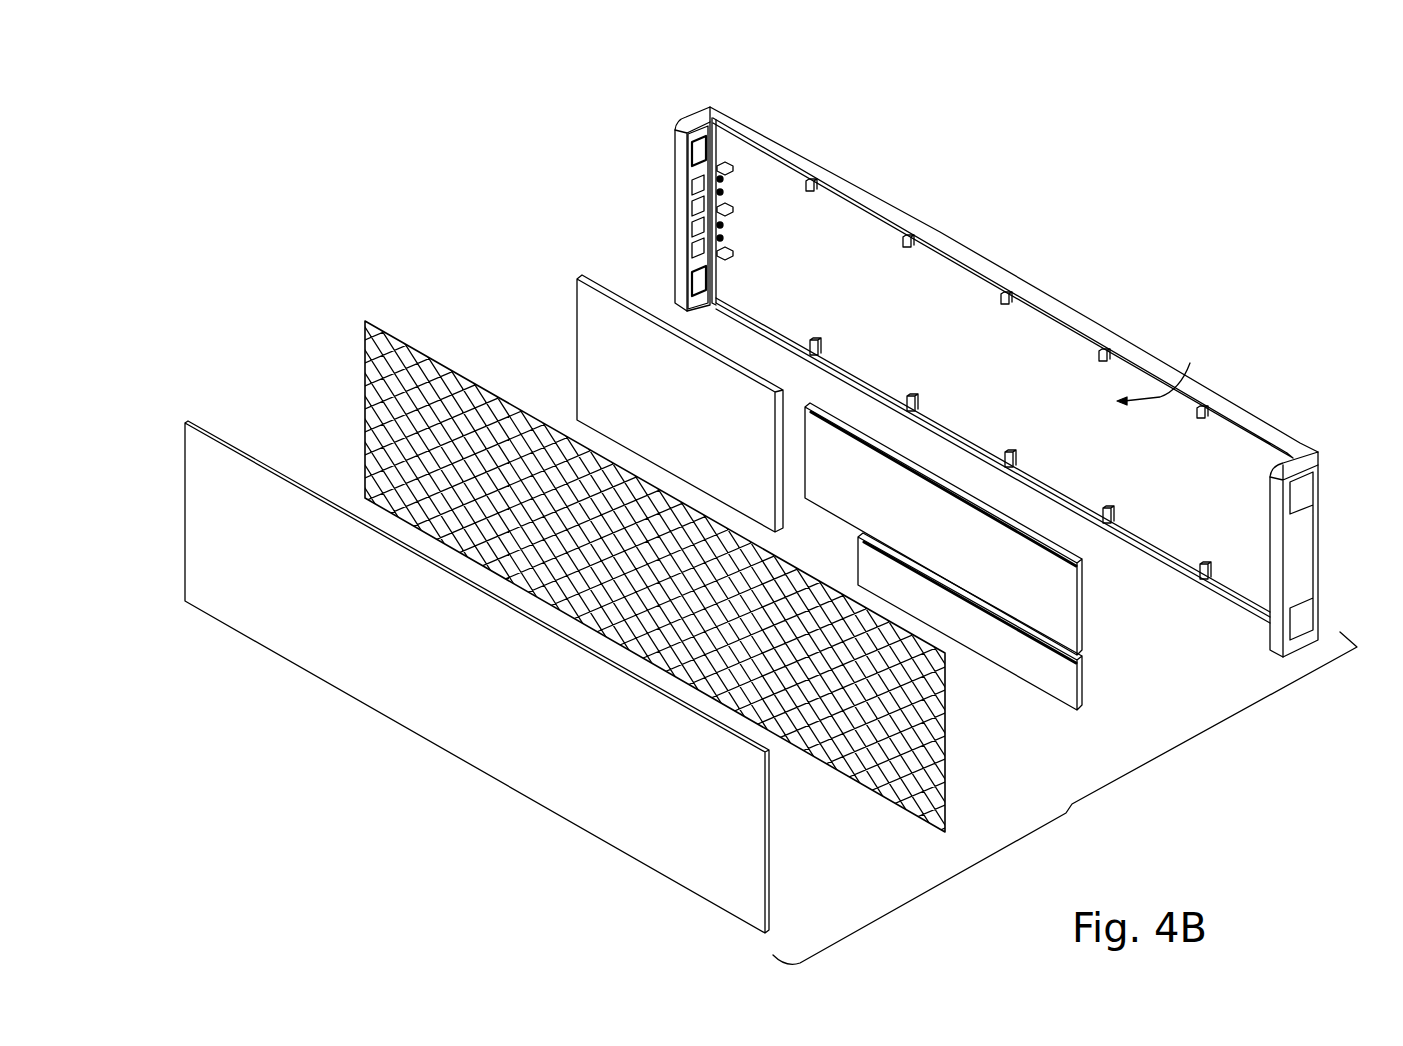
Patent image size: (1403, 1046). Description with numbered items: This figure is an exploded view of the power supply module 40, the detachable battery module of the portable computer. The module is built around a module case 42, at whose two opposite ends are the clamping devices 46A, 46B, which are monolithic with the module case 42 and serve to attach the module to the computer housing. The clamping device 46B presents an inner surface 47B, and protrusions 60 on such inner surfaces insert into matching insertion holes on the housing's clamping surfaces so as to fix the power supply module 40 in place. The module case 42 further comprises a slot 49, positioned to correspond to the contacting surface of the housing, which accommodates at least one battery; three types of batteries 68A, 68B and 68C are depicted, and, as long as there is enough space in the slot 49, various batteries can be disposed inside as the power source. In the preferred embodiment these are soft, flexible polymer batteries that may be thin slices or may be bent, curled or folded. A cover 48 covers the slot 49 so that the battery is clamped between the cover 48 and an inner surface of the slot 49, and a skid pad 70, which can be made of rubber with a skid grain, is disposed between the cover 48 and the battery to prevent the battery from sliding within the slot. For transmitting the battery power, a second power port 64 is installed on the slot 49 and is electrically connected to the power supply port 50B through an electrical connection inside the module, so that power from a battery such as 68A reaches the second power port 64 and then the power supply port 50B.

The power supply module 40 is at (1073, 808).
The module case 42 is at (1032, 297).
The clamping device 46A is at (1308, 460).
The clamping device 46B is at (692, 122).
The inner surface 47B is at (690, 177).
The cover 48 is at (760, 823).
The slot 49 is at (1163, 370).
The power supply port 50B is at (690, 187).
The protrusions 60 is at (695, 158).
The second power port 64 is at (732, 227).
The battery 68A is at (585, 340).
The battery 68B is at (1070, 626).
The battery 68C is at (1070, 683).
The skid pad 70 is at (942, 710).